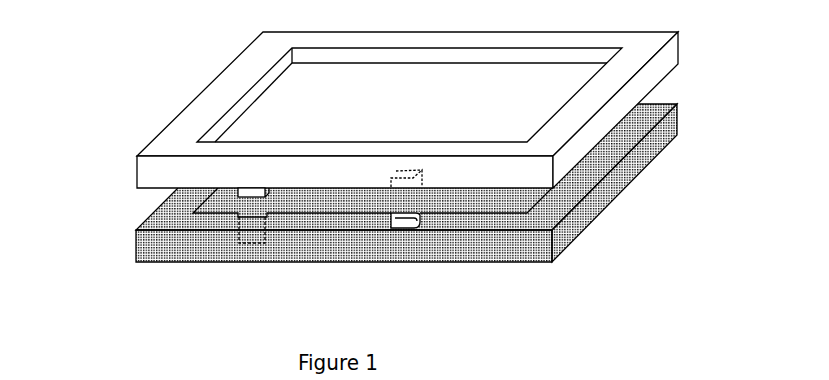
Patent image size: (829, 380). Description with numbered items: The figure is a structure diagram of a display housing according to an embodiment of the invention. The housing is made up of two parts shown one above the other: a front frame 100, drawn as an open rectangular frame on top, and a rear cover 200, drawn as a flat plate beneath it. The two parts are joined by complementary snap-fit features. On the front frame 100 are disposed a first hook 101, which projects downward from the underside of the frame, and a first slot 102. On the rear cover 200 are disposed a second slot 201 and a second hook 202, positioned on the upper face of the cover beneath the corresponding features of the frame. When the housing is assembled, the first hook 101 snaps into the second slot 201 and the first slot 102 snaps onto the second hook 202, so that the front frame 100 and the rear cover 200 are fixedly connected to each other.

The front frame 100 is at (150, 175).
The first hook 101 is at (252, 193).
The first slot 102 is at (393, 181).
The rear cover 200 is at (148, 248).
The second slot 201 is at (248, 239).
The second hook 202 is at (405, 229).